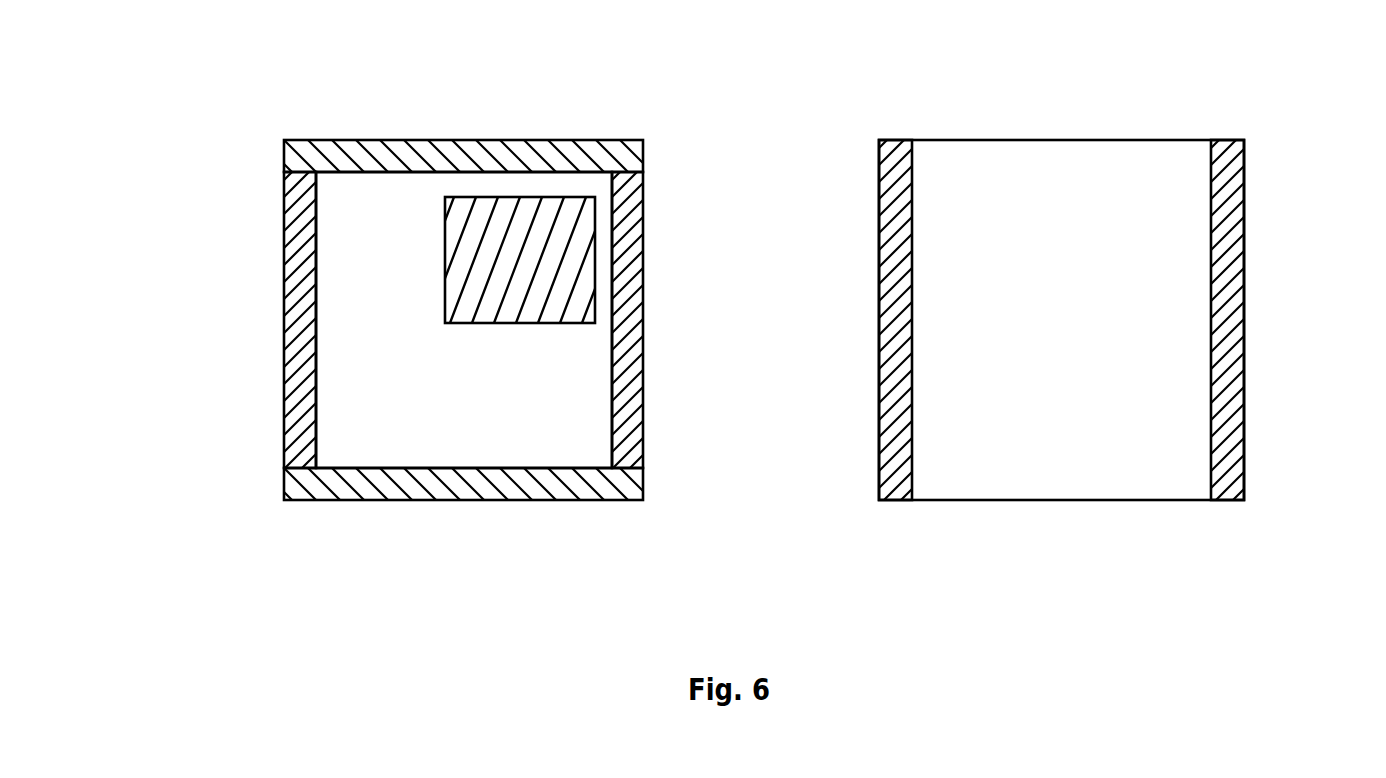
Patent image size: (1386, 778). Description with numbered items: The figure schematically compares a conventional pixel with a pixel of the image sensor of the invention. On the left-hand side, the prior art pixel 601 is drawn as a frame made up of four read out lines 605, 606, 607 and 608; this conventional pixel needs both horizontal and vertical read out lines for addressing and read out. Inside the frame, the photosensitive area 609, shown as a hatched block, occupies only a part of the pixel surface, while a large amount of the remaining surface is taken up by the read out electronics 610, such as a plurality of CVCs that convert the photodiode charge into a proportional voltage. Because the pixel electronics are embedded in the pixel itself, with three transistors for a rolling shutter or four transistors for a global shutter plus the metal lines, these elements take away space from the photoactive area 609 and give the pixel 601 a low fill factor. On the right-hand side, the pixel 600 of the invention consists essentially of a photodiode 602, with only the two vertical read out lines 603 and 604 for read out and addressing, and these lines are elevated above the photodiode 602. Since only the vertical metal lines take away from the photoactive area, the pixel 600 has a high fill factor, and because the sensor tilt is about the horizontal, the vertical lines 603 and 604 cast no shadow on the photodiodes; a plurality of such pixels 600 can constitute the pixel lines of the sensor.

The pixel 600 is at (1128, 350).
The prior art pixel 601 is at (475, 349).
The photodiode 602 is at (1098, 140).
The vertical read out line 603 is at (1244, 286).
The vertical read out line 604 is at (900, 140).
The read out line 605 is at (643, 311).
The read out line 606 is at (284, 328).
The read out line 607 is at (378, 140).
The read out line 608 is at (502, 500).
The photosensitive area 609 is at (523, 197).
The read out electronics 610 is at (340, 258).